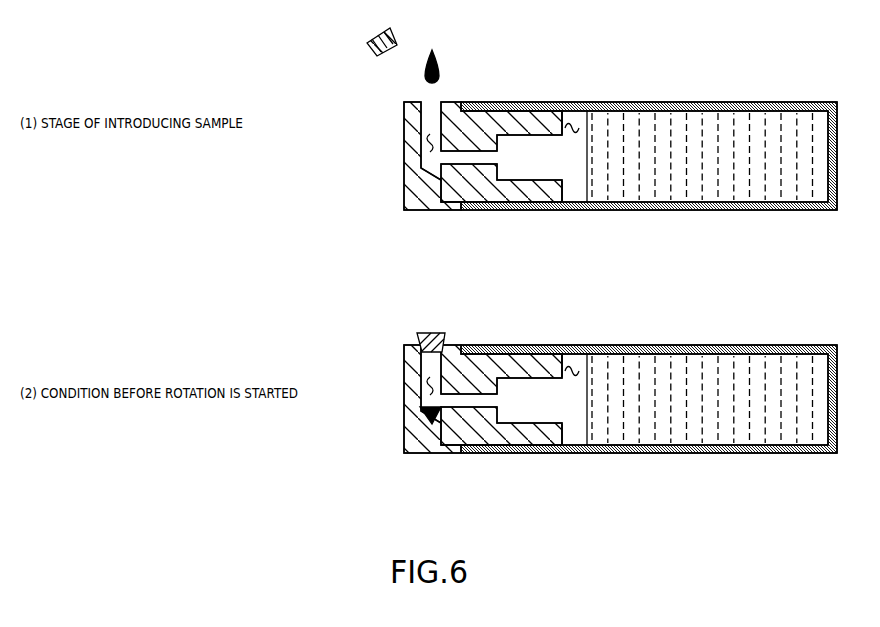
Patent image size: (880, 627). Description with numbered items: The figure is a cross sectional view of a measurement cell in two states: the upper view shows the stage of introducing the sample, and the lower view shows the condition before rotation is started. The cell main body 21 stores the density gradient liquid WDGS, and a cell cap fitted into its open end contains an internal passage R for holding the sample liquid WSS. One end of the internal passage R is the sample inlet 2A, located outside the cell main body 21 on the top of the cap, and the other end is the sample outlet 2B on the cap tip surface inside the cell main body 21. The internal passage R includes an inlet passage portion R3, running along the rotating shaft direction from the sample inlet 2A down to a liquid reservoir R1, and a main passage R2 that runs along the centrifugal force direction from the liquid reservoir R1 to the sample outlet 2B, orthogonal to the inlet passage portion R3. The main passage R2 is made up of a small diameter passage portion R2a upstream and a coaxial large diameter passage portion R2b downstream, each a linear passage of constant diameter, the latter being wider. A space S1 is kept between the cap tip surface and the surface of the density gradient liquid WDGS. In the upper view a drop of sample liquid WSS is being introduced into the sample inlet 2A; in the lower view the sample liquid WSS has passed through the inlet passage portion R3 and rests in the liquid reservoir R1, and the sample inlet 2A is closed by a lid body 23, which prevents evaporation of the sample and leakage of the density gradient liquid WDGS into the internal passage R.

The cell main body 21 is at (748, 102).
The lid body 23 is at (371, 34).
The sample inlet 2A is at (424, 95).
The sample outlet 2B is at (566, 169).
The internal passage R is at (426, 143).
The liquid reservoir R1 is at (428, 176).
The main passage R2 is at (448, 240).
The small diameter passage portion R2a is at (468, 167).
The large diameter passage portion R2b is at (535, 182).
The inlet passage portion R3 is at (420, 127).
The space S1 is at (578, 126).
The sample liquid WSS is at (442, 62).
The density gradient liquid WDGS is at (663, 132).